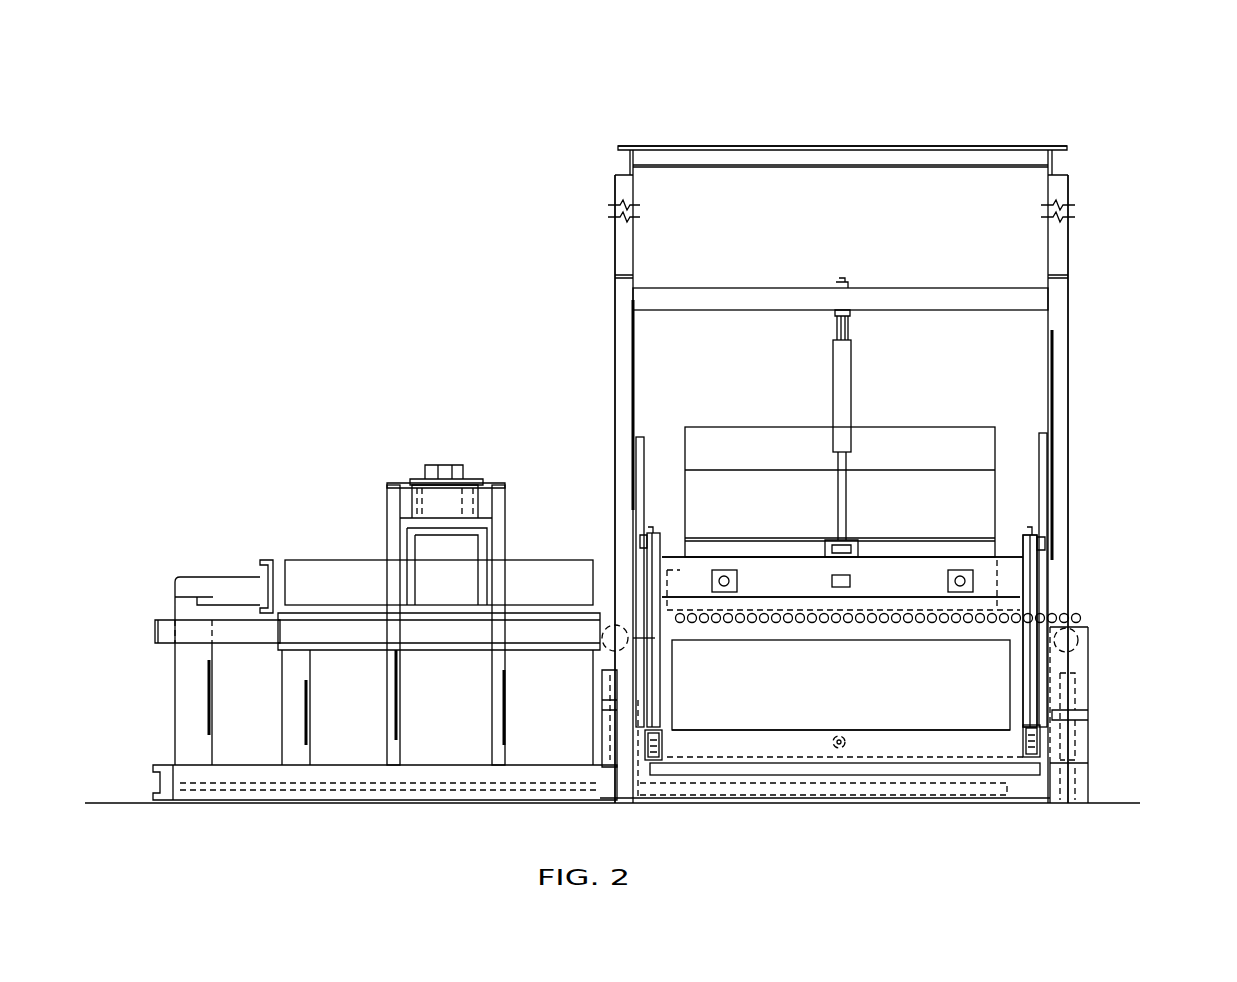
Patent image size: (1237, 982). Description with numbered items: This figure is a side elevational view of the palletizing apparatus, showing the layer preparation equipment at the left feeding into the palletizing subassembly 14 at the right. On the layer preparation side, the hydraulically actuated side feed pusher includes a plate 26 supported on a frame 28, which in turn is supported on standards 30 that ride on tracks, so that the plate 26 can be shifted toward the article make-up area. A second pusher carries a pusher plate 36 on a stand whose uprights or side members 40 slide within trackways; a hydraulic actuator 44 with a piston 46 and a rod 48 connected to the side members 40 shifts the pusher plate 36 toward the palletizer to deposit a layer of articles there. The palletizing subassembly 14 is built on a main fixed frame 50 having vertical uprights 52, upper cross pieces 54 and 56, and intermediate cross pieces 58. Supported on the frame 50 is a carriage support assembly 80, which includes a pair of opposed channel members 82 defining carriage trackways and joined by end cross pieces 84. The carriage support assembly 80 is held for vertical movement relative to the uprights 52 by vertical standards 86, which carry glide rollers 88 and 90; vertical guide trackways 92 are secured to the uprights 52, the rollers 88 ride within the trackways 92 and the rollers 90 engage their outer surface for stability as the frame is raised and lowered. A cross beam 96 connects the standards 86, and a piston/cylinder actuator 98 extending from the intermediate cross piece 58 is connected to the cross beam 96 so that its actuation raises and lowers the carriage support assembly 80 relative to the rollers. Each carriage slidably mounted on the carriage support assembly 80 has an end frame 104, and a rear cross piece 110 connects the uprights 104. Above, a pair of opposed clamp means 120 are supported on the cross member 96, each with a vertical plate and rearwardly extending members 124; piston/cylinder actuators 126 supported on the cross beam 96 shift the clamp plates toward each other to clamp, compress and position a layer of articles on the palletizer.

The palletizing subassembly 14 is at (1090, 360).
The plate 26 is at (537, 570).
The frame 28 is at (483, 535).
The standards 30 is at (500, 585).
The pusher plate 36 is at (275, 565).
The side members 40 is at (188, 700).
The hydraulic actuator 44 is at (675, 813).
The piston 46 is at (805, 790).
The rod 48 is at (400, 790).
The main fixed frame 50 is at (1082, 215).
The vertical uprights 52 is at (632, 330).
The upper cross piece 54 is at (833, 146).
The upper cross piece 56 is at (1052, 160).
The intermediate cross piece 58 is at (952, 292).
The carriage support assembly 80 is at (1012, 577).
The channel members 82 is at (645, 748).
The end cross pieces 84 is at (1030, 773).
The vertical standards 86 is at (657, 560).
The glide rollers 88 is at (1043, 535).
The glide rollers 90 is at (1033, 540).
The vertical guide trackways 92 is at (640, 437).
The cross beam 96 is at (890, 572).
The piston/cylinder actuator 98 is at (864, 410).
The end frame 104 is at (673, 683).
The rear cross piece 110 is at (815, 735).
The clamp means 120 is at (772, 408).
The rearwardly extending members 124 is at (975, 548).
The piston/cylinder actuators 126 is at (724, 576).